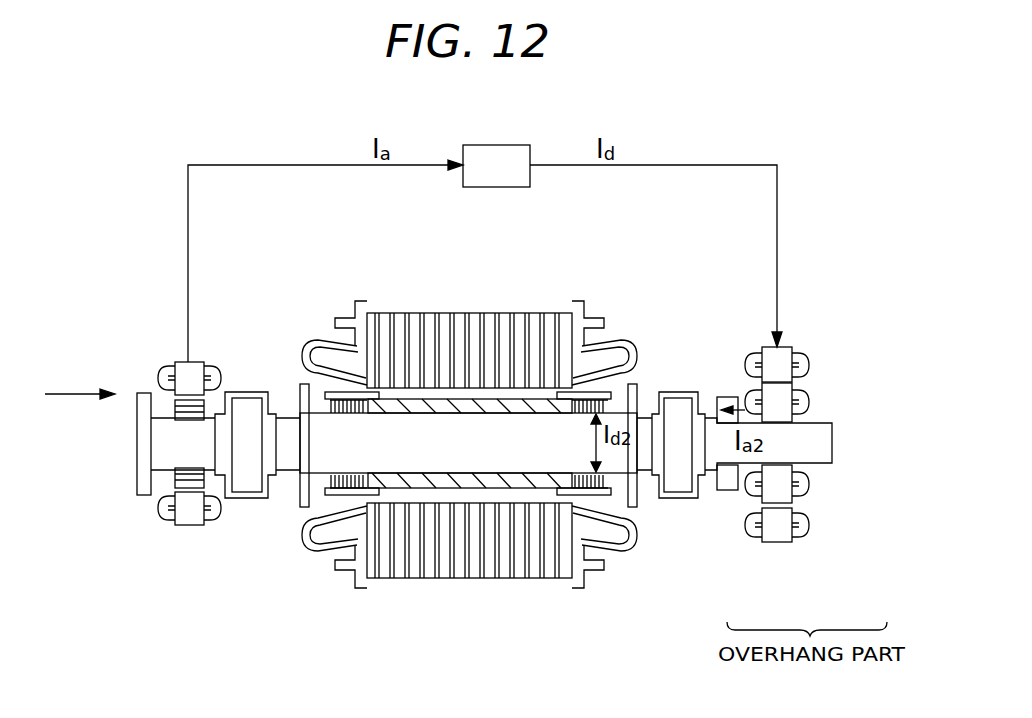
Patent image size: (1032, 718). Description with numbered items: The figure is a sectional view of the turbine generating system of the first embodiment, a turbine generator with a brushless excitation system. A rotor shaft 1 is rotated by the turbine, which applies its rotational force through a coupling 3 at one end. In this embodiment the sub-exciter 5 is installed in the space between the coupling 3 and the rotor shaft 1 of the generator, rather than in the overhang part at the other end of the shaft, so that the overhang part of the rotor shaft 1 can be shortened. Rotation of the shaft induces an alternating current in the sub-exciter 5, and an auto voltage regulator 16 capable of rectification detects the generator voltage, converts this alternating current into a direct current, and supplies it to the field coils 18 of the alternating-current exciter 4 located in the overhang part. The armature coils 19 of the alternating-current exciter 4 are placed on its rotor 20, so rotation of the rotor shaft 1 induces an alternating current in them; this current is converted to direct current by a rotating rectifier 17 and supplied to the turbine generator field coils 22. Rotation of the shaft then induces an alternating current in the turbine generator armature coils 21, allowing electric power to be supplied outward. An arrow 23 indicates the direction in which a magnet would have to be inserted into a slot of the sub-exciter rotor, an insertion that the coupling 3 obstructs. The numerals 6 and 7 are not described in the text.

The rotor shaft 1 is at (207, 438).
The coupling 3 is at (146, 398).
The alternating-current exciter 4 is at (750, 483).
The sub-exciter 5 is at (194, 495).
The second bearing 6 is at (675, 483).
The stator 7 is at (476, 316).
The auto voltage regulator 16 is at (497, 157).
The rotating rectifier 17 is at (727, 398).
The field coils 18 is at (752, 528).
The armature coils 19 is at (745, 409).
The rotor 20 is at (772, 478).
The turbine generator armature coils 21 is at (628, 552).
The turbine generator field coils 22 is at (498, 472).
The arrow 23 is at (73, 393).